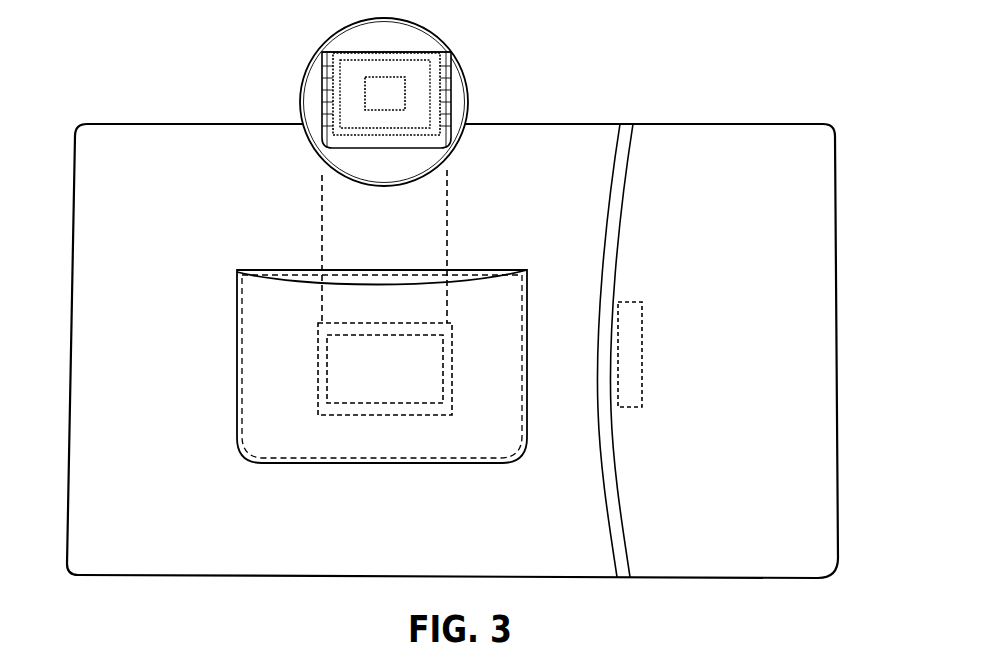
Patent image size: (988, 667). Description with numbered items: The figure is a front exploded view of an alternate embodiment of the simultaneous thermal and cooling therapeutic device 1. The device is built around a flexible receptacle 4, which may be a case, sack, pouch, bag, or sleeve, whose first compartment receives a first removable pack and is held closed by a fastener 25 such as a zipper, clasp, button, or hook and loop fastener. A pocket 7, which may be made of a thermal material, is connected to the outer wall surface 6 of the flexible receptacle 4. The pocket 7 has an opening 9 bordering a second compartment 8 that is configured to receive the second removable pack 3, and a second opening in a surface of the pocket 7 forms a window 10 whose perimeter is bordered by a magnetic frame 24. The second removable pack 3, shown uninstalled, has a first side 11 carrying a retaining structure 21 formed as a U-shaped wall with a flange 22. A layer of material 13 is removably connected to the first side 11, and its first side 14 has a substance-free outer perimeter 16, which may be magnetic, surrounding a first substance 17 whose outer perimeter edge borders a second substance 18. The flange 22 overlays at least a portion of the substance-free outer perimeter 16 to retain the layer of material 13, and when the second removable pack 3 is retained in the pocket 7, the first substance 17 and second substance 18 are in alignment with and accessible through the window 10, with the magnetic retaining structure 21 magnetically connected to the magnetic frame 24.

The simultaneous thermal and cooling therapeutic device 1 is at (470, 325).
The second removable pack 3 is at (349, 102).
The flexible receptacle 4 is at (826, 533).
The outer wall surface 6 is at (578, 127).
The pocket 7 is at (272, 441).
The second compartment 8 is at (342, 343).
The opening 9 is at (292, 276).
The window 10 is at (350, 383).
The first side 11 is at (308, 89).
The layer of material 13 is at (343, 55).
The first side 14 is at (437, 82).
The substance-free outer perimeter 16 is at (338, 108).
The first substance 17 is at (424, 98).
The second substance 18 is at (397, 103).
The retaining structure 21 is at (327, 76).
The flange 22 is at (328, 72).
The magnetic frame 24 is at (345, 414).
The fastener 25 is at (628, 333).